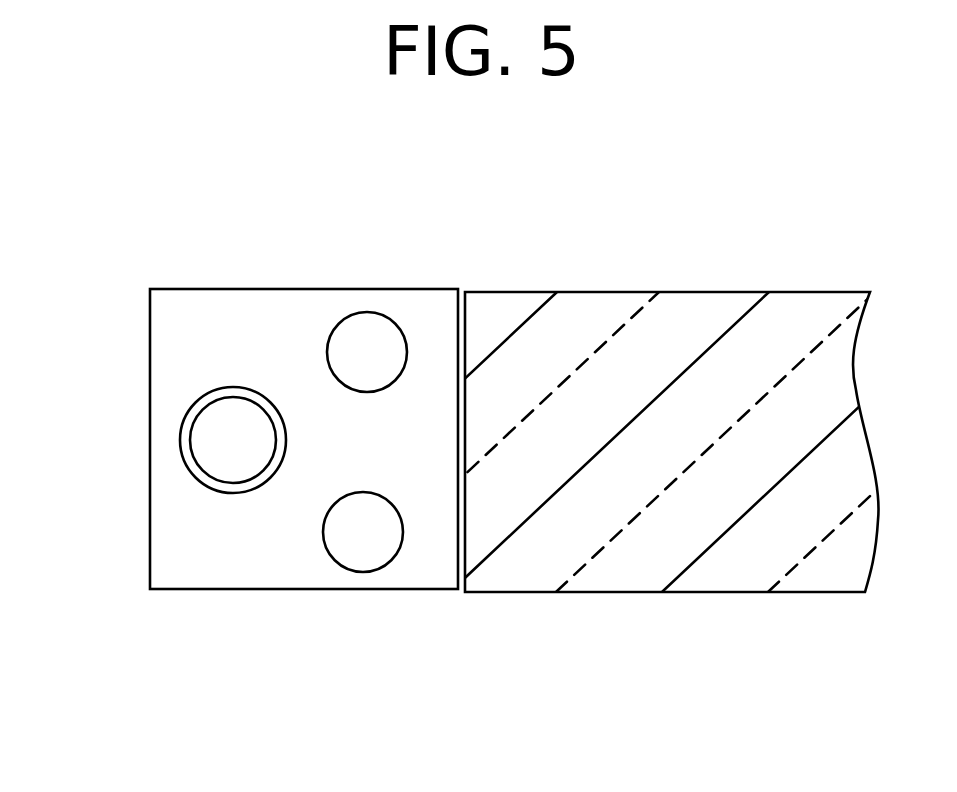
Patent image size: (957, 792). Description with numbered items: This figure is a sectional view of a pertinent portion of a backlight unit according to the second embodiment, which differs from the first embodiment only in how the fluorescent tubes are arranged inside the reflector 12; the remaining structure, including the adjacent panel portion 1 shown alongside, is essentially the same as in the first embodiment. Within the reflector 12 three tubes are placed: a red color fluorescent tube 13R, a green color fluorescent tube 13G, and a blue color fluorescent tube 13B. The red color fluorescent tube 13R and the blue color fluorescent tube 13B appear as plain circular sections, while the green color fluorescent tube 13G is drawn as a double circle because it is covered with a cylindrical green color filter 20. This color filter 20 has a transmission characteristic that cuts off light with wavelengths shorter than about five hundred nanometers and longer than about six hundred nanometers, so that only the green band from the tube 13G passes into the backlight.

The display panel 1 is at (763, 307).
The reflector 12 is at (195, 590).
The blue color fluorescent tube 13B is at (383, 313).
The green color fluorescent tube 13G is at (212, 418).
The red color fluorescent tube 13R is at (368, 570).
The green color filter 20 is at (183, 457).